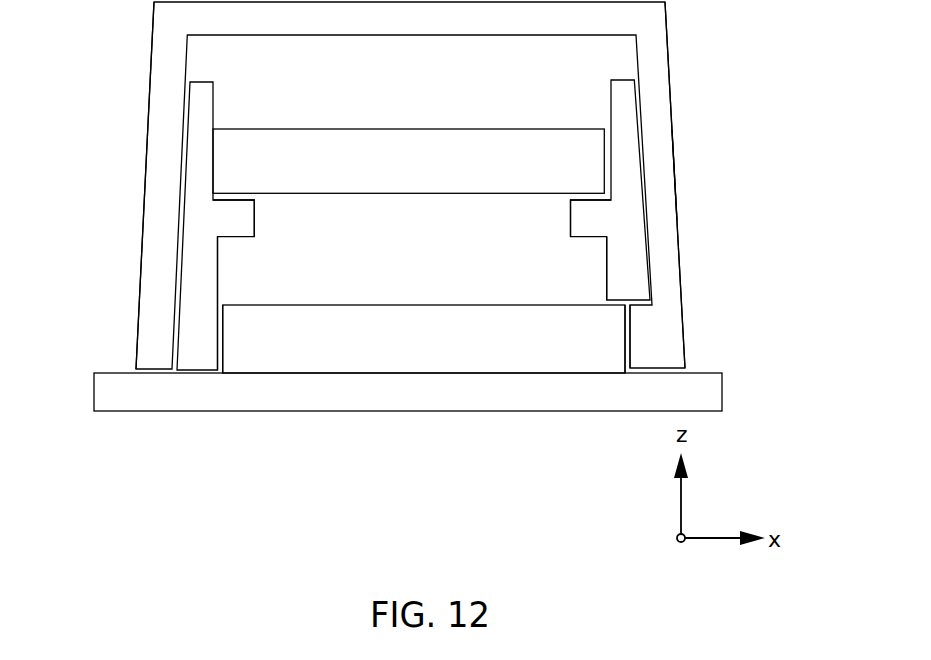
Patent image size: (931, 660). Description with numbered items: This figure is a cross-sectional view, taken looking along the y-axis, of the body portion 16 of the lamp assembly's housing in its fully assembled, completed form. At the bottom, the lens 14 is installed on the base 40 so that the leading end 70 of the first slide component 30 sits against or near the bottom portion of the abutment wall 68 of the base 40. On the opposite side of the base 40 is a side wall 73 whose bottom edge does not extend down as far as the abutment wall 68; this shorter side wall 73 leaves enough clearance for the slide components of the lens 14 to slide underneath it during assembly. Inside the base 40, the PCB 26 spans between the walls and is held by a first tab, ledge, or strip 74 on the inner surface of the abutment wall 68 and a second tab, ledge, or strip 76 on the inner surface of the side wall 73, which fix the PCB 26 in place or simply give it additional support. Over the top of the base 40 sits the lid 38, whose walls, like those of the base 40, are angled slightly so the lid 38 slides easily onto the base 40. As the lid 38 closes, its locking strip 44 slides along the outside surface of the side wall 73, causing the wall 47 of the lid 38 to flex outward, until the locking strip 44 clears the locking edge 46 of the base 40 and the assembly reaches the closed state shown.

The lens 14 is at (353, 413).
The body portion 16 is at (686, 147).
The PCB 26 is at (382, 129).
The first slide component 30 is at (382, 305).
The lid 38 is at (145, 146).
The base 40 is at (216, 92).
The locking strip 44 is at (630, 357).
The locking edge 46 is at (615, 303).
The wall 47 is at (675, 217).
The abutment wall 68 is at (210, 254).
The leading end 70 is at (223, 327).
The side wall 73 is at (618, 254).
The first tab, ledge, or strip 74 is at (255, 217).
The second tab, ledge, or strip 76 is at (570, 217).